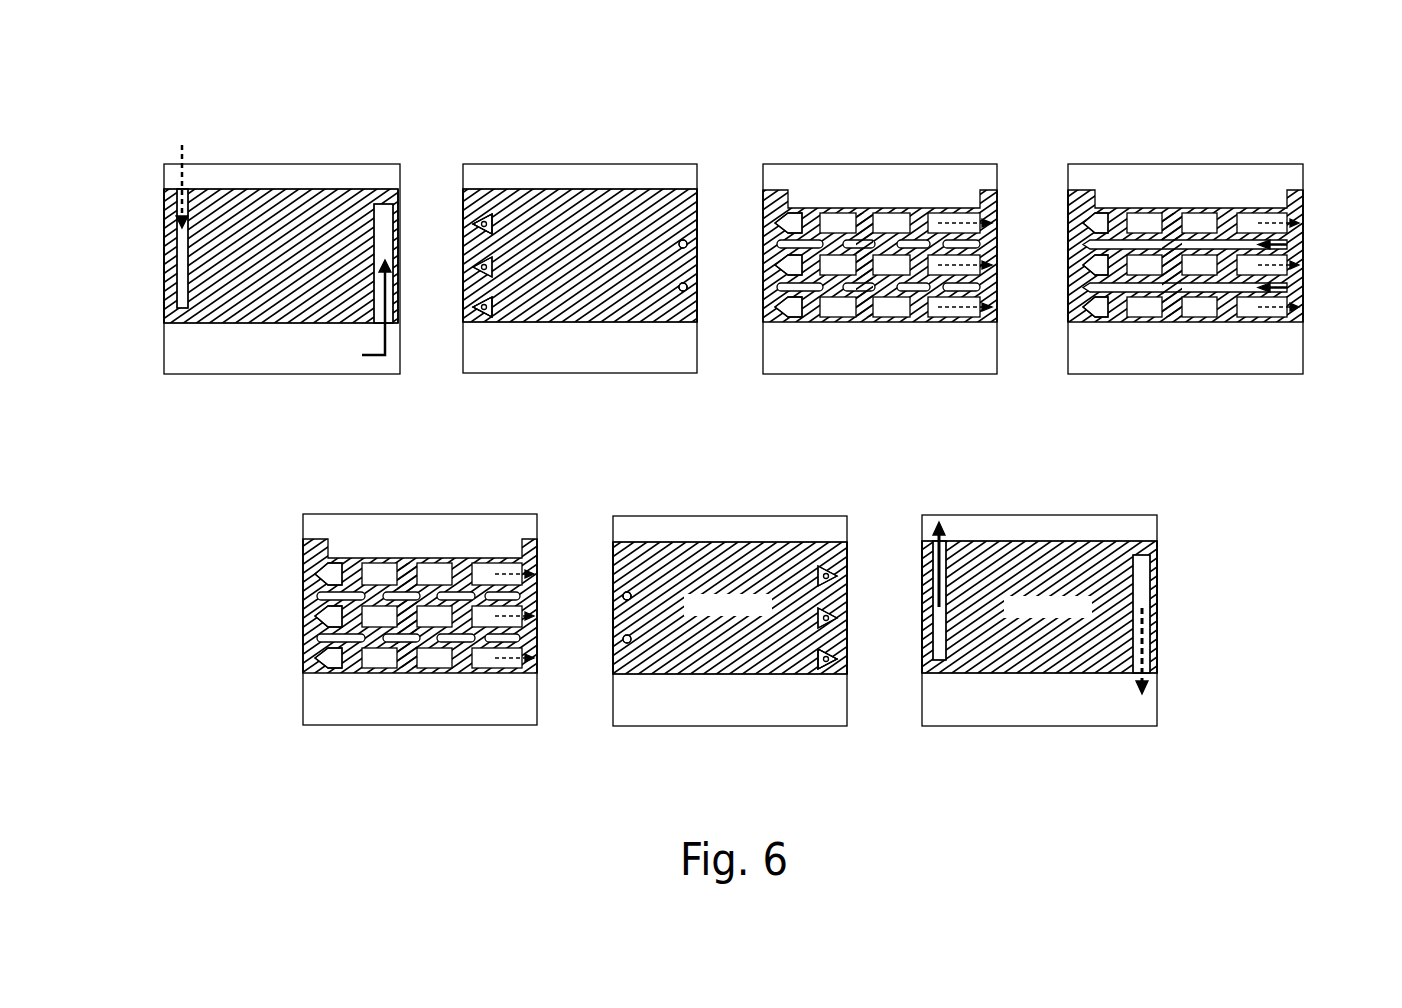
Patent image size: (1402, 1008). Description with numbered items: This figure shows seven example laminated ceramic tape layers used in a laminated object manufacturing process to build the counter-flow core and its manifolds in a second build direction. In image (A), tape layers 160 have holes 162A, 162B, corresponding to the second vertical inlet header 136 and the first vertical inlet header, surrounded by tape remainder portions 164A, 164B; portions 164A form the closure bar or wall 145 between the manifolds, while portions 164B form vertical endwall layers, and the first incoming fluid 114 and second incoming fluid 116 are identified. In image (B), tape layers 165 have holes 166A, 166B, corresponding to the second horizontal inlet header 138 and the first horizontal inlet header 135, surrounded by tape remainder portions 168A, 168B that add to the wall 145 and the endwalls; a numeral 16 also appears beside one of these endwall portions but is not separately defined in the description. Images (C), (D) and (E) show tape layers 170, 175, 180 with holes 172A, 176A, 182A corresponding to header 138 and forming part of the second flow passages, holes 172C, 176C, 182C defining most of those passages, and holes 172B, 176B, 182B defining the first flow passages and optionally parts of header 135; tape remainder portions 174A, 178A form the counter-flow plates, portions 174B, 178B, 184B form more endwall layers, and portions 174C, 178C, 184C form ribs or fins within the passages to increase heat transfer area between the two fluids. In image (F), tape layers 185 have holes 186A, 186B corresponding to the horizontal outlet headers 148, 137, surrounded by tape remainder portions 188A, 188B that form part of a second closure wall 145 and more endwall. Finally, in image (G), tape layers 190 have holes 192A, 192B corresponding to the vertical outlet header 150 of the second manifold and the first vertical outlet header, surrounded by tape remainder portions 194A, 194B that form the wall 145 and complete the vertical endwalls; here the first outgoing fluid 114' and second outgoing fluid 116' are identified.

The laminated ceramic tape layers 160 is at (262, 237).
The laminated ceramic tape layers 165 is at (606, 247).
The laminated ceramic tape layers 170 is at (876, 247).
The laminated ceramic tape layers 175 is at (1196, 242).
The laminated ceramic tape layers 180 is at (361, 621).
The laminated ceramic tape layers 185 is at (756, 616).
The laminated ceramic tape layers 190 is at (1091, 621).
The first incoming fluid 114 is at (837, 413).
The first outgoing fluid 114' is at (966, 542).
The second incoming fluid 116 is at (760, 374).
The second outgoing fluid 116' is at (1015, 661).
The outlet 16 is at (680, 292).
The first horizontal inlet headers 135 is at (709, 206).
The second vertical inlet header 136 is at (266, 302).
The first horizontal outlet headers 137 is at (1022, 571).
The second horizontal inlet header 138 is at (699, 381).
The side closure bars or walls 145 is at (660, 392).
The second horizontal outlet headers 148 is at (666, 655).
The second vertical outlet header 150 is at (1018, 630).
The hole 162A is at (183, 293).
The hole 162B is at (380, 230).
The tape remainder portion 164A is at (255, 207).
The tape remainder portions 164B is at (392, 200).
The hole 166A is at (494, 267).
The hole 166B is at (688, 242).
The tape remainder portion 168A is at (585, 276).
The tape remainder portions 168B is at (466, 310).
The holes 172A is at (790, 220).
The holes 172B is at (890, 226).
The holes 172C is at (855, 292).
The tape remainder portions 174A is at (960, 322).
The tape remainder portions 174B is at (763, 306).
The tape remainder portions 174C is at (935, 232).
The holes 176A is at (1098, 225).
The holes 176B is at (1200, 306).
The holes 176C is at (1145, 290).
The tape remainder portions 178A is at (1240, 233).
The tape remainder portions 178B is at (1078, 195).
The tape remainder portions 178C is at (1237, 303).
The holes 182A is at (322, 577).
The holes 182B is at (430, 578).
The holes 182C is at (400, 600).
The tape remainder portions 184B is at (325, 673).
The tape remainder portions 184C is at (438, 642).
The holes 186A is at (631, 645).
The holes 186B is at (822, 570).
The tape remainder portion 188A is at (730, 608).
The tape remainder portions 188B is at (618, 585).
The hole 192A is at (942, 632).
The hole 192B is at (1140, 568).
The tape remainder portion 194A is at (1039, 607).
The tape remainder portions 194B is at (1157, 600).